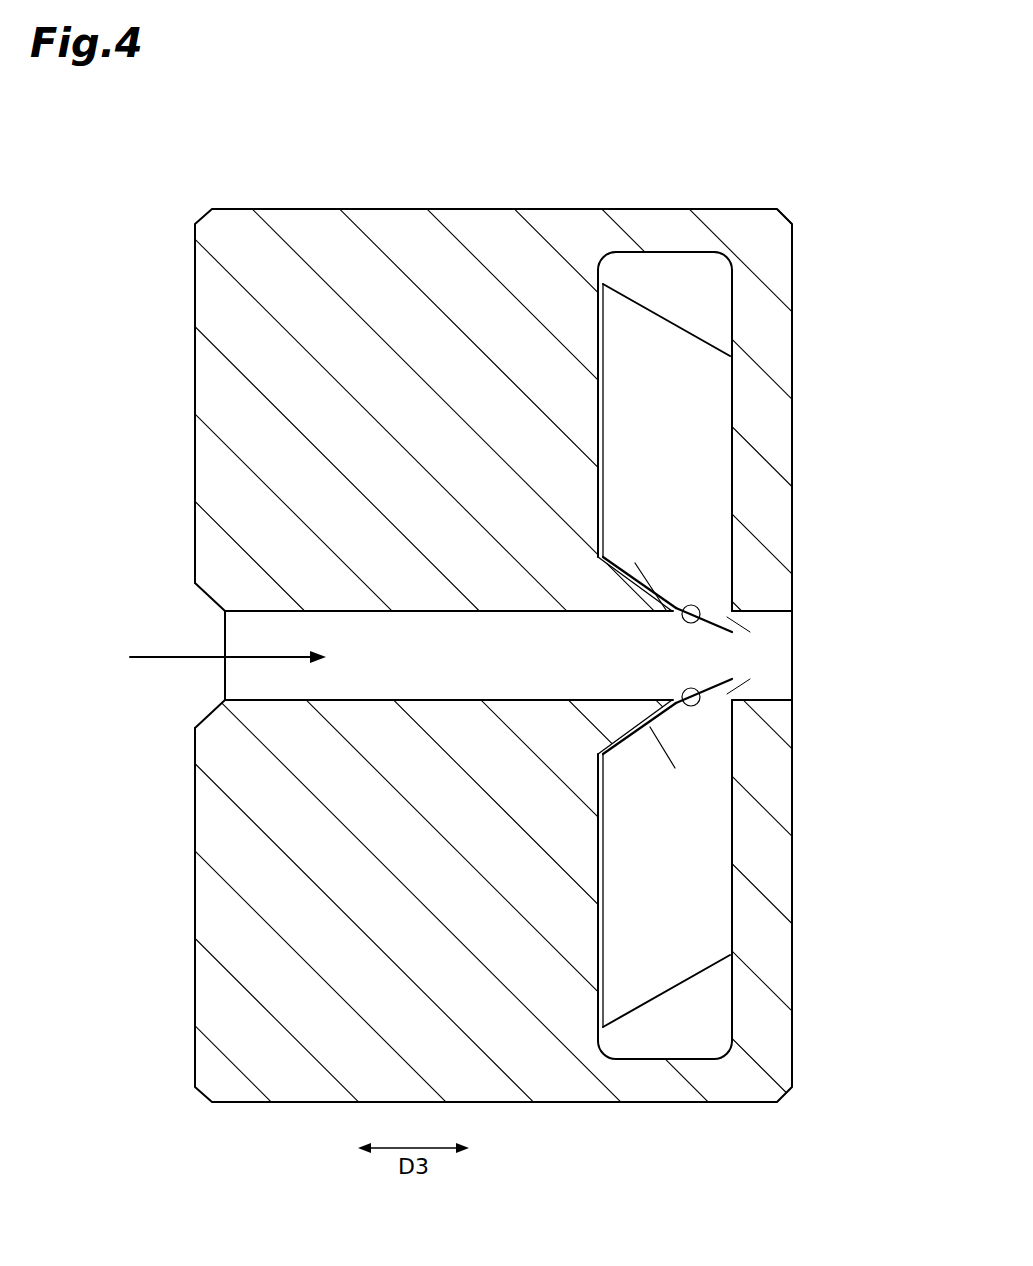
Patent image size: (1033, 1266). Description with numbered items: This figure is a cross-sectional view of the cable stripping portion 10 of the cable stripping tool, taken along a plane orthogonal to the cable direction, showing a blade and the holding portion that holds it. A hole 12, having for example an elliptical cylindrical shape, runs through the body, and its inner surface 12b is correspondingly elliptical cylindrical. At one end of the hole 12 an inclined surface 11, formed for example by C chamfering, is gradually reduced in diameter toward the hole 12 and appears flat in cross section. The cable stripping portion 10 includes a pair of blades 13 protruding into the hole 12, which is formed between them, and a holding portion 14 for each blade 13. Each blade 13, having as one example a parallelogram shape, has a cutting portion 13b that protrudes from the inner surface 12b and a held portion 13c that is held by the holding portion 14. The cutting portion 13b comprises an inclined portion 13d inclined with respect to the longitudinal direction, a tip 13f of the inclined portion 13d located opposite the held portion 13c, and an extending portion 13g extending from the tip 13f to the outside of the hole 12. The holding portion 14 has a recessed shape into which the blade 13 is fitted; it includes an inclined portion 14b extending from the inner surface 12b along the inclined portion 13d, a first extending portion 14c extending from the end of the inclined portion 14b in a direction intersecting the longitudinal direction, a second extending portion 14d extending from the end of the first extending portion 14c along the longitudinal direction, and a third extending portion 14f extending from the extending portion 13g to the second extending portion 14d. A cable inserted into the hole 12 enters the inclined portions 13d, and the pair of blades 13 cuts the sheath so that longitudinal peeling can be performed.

The cable stripping portion 10 is at (688, 141).
The inclined surface 11 is at (200, 713).
The hole 12 is at (420, 655).
The inner surface 12b is at (210, 655).
The blade 13 is at (524, 656).
The cutting portion 13b is at (742, 632).
The held portion 13c is at (635, 563).
The inclined portion 13d is at (684, 608).
The tip 13f is at (735, 633).
The extending portion 13g is at (727, 617).
The holding portion 14 is at (753, 657).
The inclined portion 14b is at (648, 592).
The first extending portion 14c is at (603, 408).
The second extending portion 14d is at (683, 254).
The third extending portion 14f is at (728, 323).